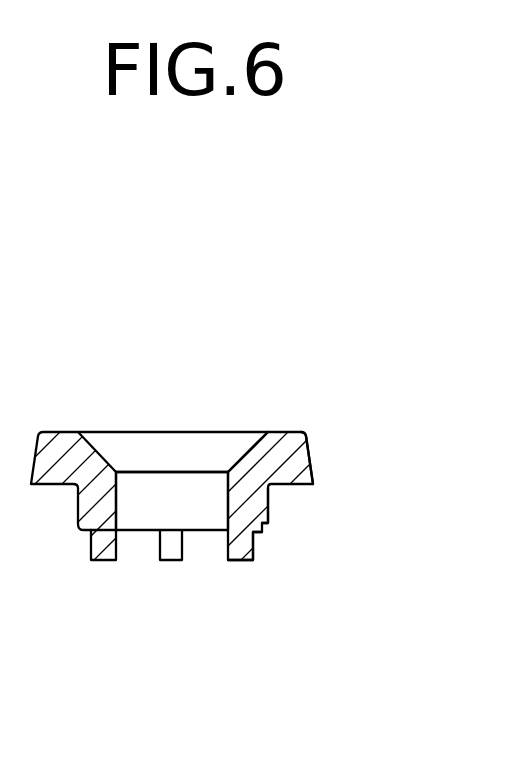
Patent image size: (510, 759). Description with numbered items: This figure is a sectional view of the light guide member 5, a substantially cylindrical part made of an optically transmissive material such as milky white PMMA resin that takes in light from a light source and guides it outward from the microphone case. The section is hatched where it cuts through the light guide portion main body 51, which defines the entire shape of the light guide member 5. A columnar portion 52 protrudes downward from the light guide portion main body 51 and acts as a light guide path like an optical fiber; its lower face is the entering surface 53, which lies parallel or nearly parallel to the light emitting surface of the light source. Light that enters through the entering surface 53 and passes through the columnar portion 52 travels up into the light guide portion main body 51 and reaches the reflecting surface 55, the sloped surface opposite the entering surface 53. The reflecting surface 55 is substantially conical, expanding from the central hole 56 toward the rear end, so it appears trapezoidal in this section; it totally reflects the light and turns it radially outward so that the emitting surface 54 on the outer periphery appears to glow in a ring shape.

The light guide member 5 is at (261, 295).
The light guide portion main body 51 is at (258, 507).
The columnar portion 52 is at (248, 542).
The entering surface 53 is at (235, 560).
The emitting surface 54 is at (310, 457).
The reflecting surface 55 is at (246, 451).
The hole 56 is at (152, 507).